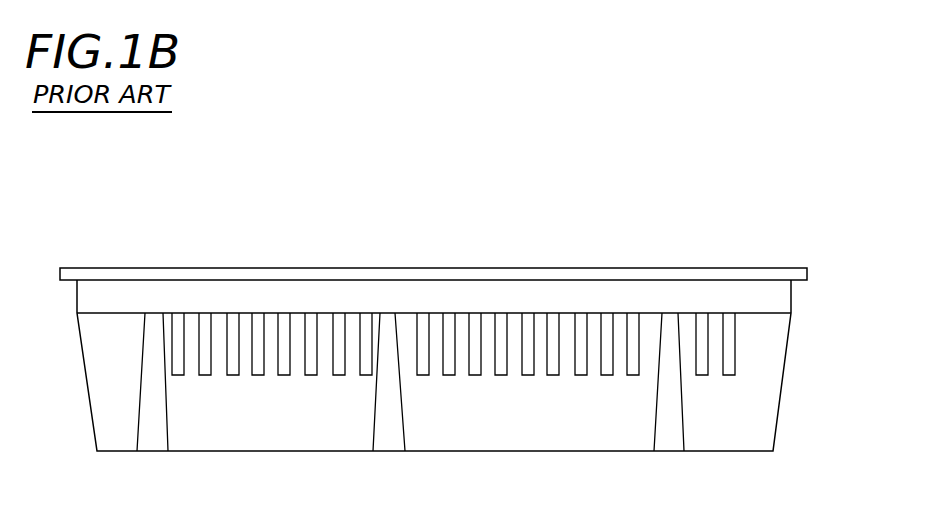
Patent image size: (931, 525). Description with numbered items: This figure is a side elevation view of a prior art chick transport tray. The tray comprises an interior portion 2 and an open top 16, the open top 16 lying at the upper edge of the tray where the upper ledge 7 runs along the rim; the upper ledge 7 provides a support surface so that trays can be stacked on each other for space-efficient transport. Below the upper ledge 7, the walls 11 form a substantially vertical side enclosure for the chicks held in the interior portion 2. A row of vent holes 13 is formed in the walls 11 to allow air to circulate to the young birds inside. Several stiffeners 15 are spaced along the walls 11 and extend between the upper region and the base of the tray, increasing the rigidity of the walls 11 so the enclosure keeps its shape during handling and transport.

The open top 16 is at (540, 258).
The upper ledge 7 is at (62, 267).
The interior portion 2 is at (625, 300).
The walls 11 is at (82, 358).
The vent holes 13 is at (737, 343).
The stiffeners 15 is at (685, 436).